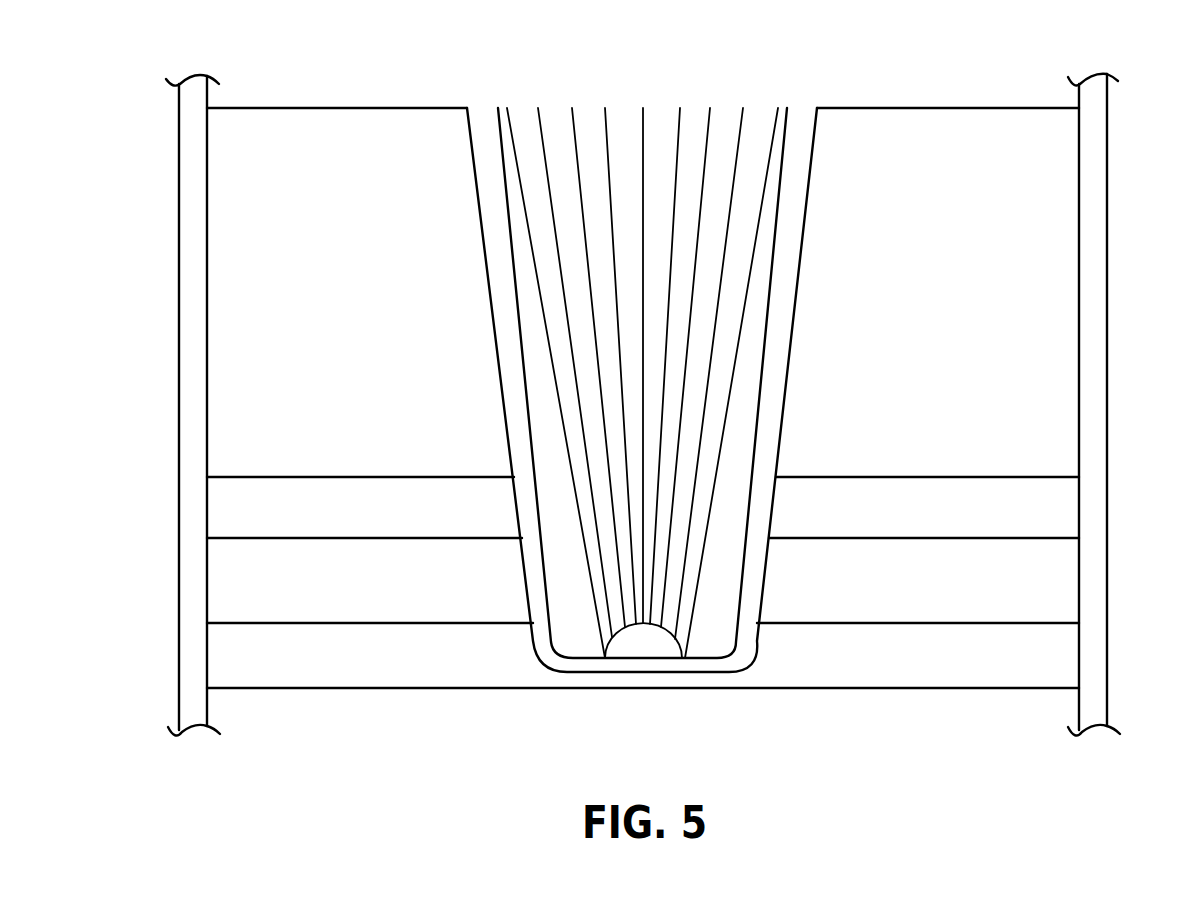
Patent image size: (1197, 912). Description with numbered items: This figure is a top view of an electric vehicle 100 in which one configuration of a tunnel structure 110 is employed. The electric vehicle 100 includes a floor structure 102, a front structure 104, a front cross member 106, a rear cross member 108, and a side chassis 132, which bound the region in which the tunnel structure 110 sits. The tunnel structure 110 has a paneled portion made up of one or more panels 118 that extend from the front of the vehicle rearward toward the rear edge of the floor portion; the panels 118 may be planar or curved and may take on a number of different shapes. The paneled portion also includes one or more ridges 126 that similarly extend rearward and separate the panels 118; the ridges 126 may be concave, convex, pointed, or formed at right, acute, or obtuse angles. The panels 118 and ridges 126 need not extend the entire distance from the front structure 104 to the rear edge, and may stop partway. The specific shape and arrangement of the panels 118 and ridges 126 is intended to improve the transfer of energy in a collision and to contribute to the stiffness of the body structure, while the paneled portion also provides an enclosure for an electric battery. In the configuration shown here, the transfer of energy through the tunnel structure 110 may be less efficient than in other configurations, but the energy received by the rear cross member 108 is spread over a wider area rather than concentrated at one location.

The electric vehicle 100 is at (98, 747).
The floor structure 102 is at (1035, 346).
The front structure 104 is at (1004, 110).
The front cross member 106 is at (1033, 524).
The rear cross member 108 is at (1033, 672).
The tunnel structure 110 is at (795, 318).
The panels 118 is at (665, 132).
The ridges 126 is at (680, 130).
The side chassis 132 is at (1097, 576).